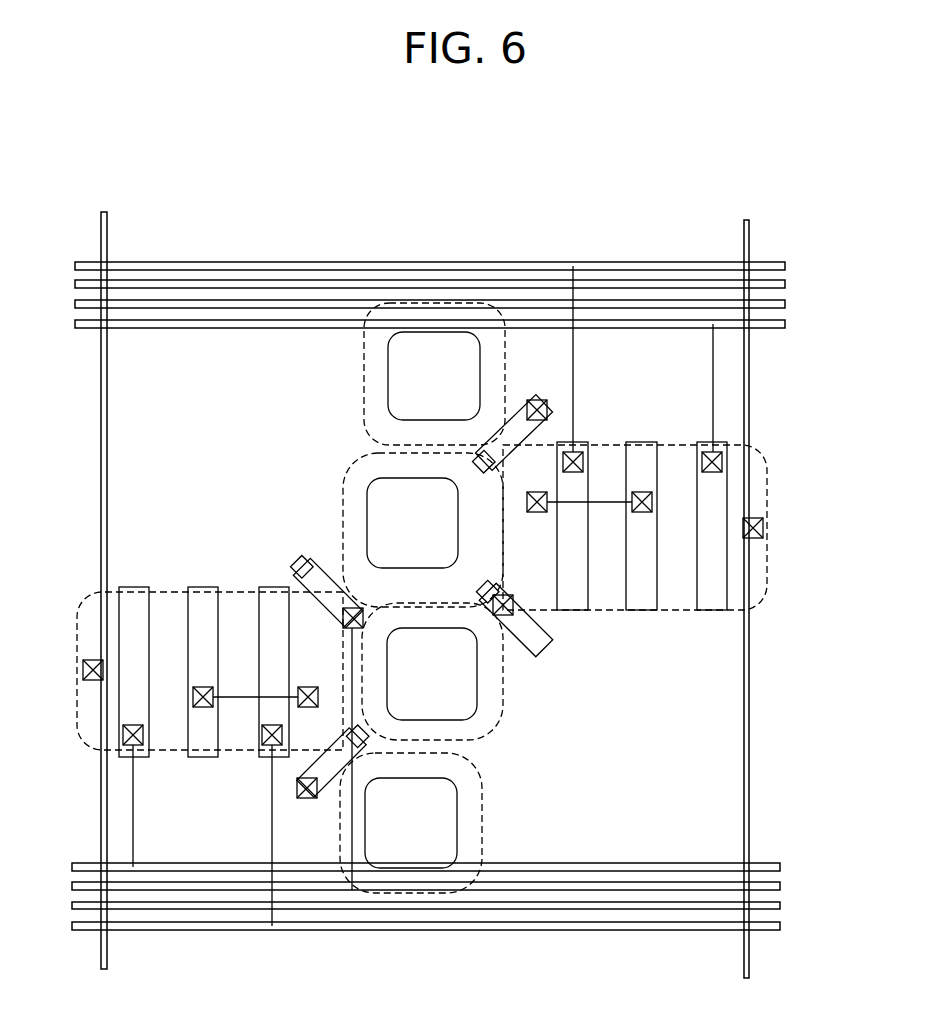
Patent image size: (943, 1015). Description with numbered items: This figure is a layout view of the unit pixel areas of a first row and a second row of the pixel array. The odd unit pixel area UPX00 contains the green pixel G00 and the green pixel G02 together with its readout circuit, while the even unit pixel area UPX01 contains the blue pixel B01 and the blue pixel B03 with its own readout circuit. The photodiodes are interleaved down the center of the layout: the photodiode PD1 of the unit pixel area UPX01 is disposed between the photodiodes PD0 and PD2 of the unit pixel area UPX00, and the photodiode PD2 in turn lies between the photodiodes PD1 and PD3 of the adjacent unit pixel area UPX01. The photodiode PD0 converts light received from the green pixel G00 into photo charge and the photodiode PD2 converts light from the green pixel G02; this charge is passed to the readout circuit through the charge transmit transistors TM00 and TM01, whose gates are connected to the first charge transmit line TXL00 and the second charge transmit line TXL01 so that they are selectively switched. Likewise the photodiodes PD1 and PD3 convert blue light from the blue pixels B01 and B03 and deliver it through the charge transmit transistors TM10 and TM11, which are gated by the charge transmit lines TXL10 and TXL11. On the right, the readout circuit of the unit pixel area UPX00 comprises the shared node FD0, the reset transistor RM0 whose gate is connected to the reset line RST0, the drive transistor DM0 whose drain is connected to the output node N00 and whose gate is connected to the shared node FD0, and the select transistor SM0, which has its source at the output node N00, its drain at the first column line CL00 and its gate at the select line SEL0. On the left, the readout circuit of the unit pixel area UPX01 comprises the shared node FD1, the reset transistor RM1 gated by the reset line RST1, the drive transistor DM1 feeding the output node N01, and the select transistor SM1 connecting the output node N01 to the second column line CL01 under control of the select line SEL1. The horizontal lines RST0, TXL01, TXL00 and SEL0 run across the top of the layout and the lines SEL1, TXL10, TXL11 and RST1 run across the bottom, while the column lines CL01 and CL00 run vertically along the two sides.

The second column line CL01 is at (103, 577).
The first column line CL00 is at (745, 585).
The reset line RST0 is at (460, 271).
The second charge transmit line TXL01 is at (461, 291).
The first charge transmit line TXL00 is at (461, 311).
The select line SEL0 is at (459, 331).
The select line SEL1 is at (456, 875).
The first charge transmit line TXL10 is at (458, 894).
The second charge transmit line TXL11 is at (456, 913).
The reset line RST1 is at (455, 934).
The photodiode PD0 is at (372, 388).
The photodiode PD1 is at (352, 491).
The photodiode PD2 is at (488, 712).
The photodiode PD3 is at (472, 822).
The green pixel G00 is at (434, 376).
The blue pixel B01 is at (412, 523).
The green pixel G02 is at (432, 674).
The blue pixel B03 is at (411, 823).
The unit pixel area UPX00 is at (770, 497).
The unit pixel area UPX01 is at (82, 745).
The reset transistor RM0 is at (573, 610).
The drive transistor DM0 is at (642, 610).
The select transistor SM0 is at (712, 610).
The shared node FD0 is at (576, 525).
The output node N00 is at (662, 525).
The select transistor SM1 is at (132, 605).
The drive transistor DM1 is at (202, 605).
The reset transistor RM1 is at (271, 605).
The output node N01 is at (183, 673).
The shared node FD1 is at (269, 673).
The charge transmit transistor TM00 is at (548, 418).
The charge transmit transistor TM01 is at (538, 650).
The charge transmit transistor TM10 is at (305, 553).
The charge transmit transistor TM11 is at (297, 788).